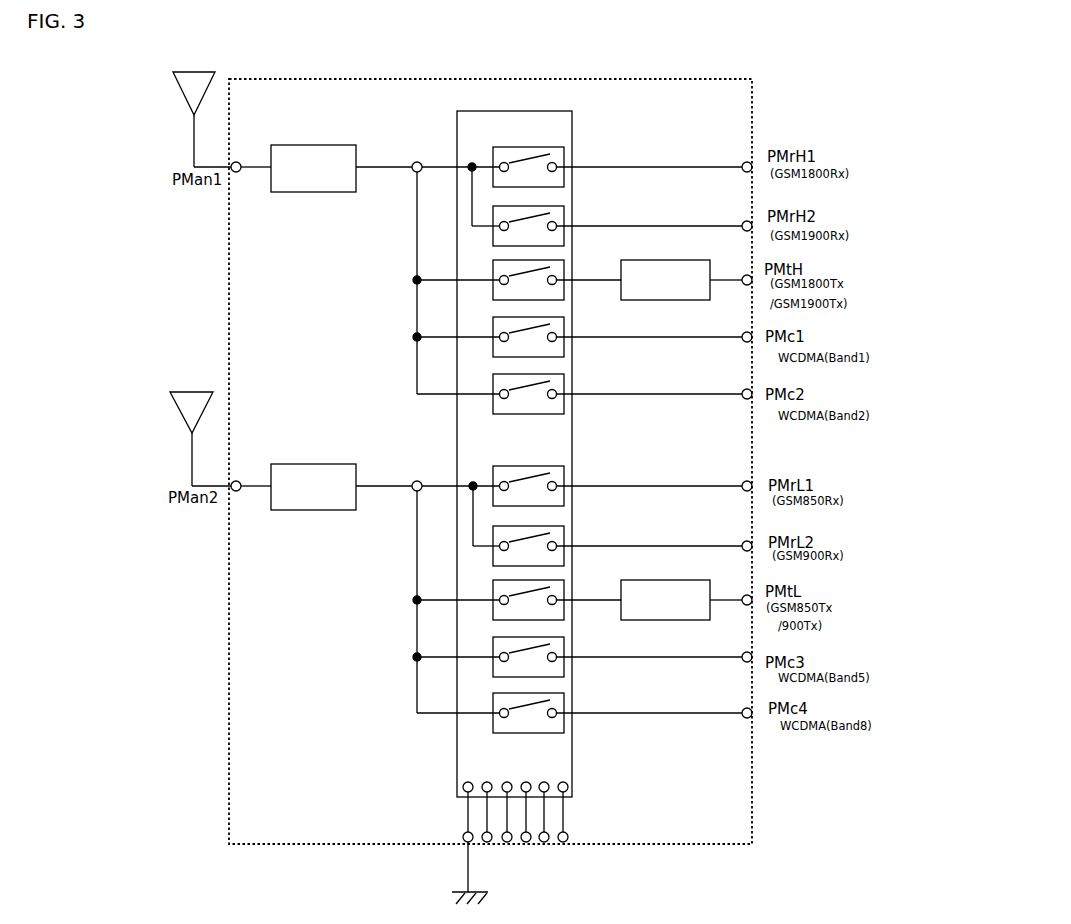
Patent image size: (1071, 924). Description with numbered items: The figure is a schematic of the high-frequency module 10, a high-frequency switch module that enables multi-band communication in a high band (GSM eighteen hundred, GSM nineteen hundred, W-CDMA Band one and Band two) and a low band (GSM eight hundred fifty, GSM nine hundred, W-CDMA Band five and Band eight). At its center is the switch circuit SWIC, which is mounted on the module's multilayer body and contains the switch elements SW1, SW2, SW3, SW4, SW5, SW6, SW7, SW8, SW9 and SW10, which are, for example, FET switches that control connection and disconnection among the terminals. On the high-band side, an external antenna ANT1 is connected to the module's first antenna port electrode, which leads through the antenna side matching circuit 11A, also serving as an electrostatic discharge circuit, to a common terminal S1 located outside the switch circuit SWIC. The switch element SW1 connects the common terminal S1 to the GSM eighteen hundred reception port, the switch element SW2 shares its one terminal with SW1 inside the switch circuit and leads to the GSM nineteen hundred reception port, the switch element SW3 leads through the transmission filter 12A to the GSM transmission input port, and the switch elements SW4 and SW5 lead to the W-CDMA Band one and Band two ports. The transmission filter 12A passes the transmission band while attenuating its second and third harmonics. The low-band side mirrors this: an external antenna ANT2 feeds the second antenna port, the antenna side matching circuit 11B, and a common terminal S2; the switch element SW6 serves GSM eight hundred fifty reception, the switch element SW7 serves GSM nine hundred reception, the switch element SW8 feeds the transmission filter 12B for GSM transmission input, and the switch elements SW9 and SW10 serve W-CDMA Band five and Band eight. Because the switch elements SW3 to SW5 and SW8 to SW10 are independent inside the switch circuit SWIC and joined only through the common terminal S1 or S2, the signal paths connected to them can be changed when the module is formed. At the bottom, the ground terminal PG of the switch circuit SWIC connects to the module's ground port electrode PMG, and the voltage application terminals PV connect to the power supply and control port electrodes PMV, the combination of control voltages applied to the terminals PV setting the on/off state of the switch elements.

The high-frequency module 10 is at (745, 79).
The antenna side matching circuit 11A is at (330, 145).
The antenna side matching circuit 11B is at (330, 464).
The transmission filter 12A is at (690, 260).
The transmission filter 12B is at (685, 620).
The switch circuit SWIC is at (537, 111).
The switch element SW1 is at (564, 183).
The switch element SW2 is at (564, 242).
The switch element SW3 is at (564, 296).
The switch element SW4 is at (564, 353).
The switch element SW5 is at (564, 410).
The switch element SW6 is at (564, 474).
The switch element SW7 is at (564, 534).
The switch element SW8 is at (564, 616).
The switch element SW9 is at (564, 673).
The switch element SW10 is at (564, 731).
The external antenna ANT1 is at (176, 72).
The external antenna ANT2 is at (176, 392).
The common terminal S1 is at (390, 156).
The common terminal S2 is at (389, 474).
The ground terminal PG is at (463, 782).
The voltage application terminals PV is at (570, 781).
The ground port electrode PMG is at (460, 845).
The power supply and control port electrodes PMV is at (570, 848).